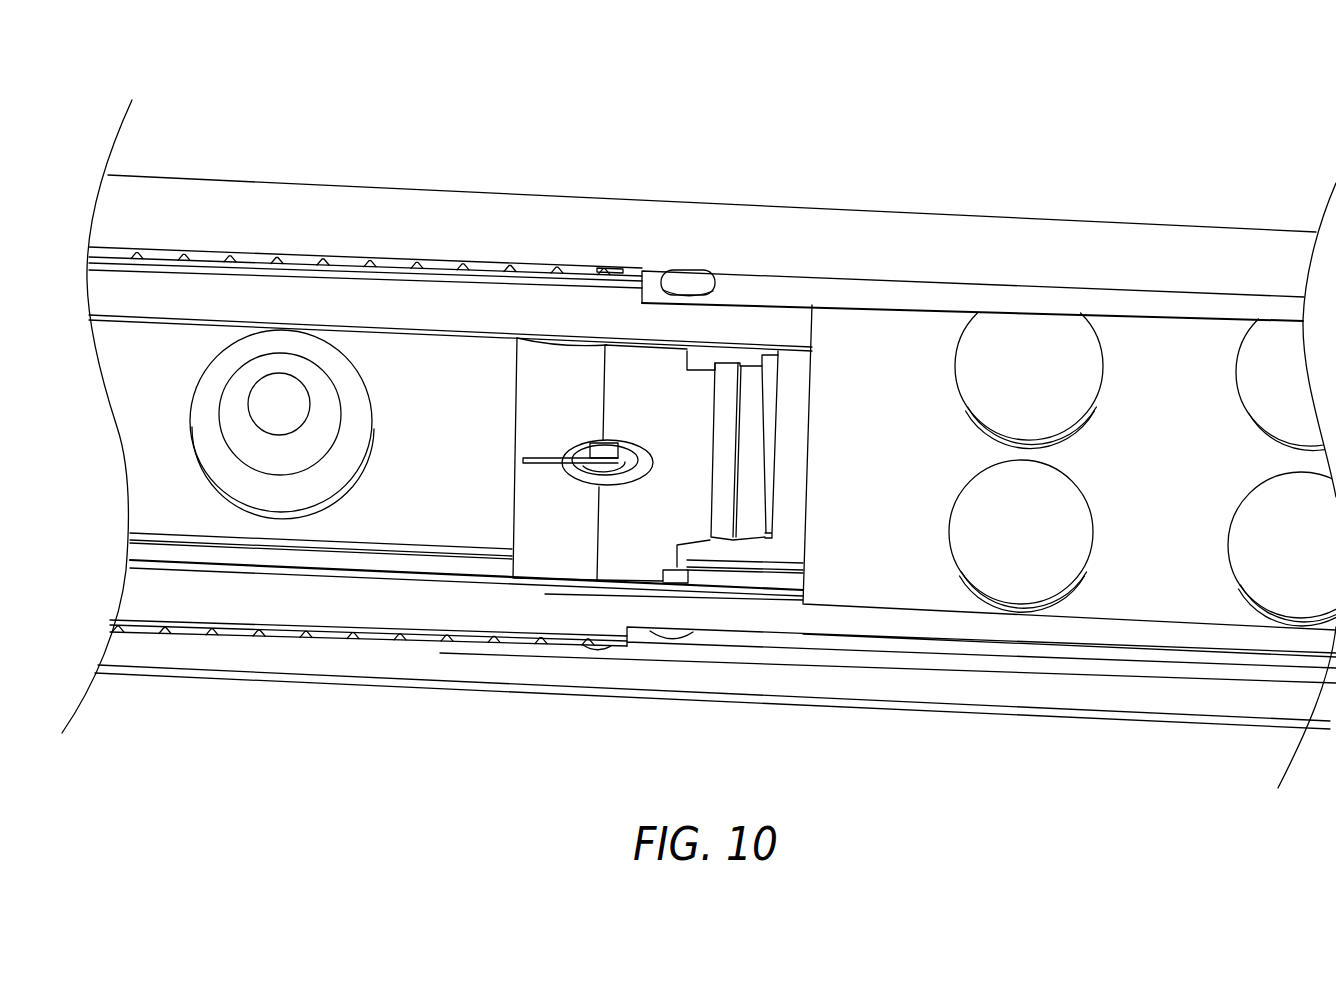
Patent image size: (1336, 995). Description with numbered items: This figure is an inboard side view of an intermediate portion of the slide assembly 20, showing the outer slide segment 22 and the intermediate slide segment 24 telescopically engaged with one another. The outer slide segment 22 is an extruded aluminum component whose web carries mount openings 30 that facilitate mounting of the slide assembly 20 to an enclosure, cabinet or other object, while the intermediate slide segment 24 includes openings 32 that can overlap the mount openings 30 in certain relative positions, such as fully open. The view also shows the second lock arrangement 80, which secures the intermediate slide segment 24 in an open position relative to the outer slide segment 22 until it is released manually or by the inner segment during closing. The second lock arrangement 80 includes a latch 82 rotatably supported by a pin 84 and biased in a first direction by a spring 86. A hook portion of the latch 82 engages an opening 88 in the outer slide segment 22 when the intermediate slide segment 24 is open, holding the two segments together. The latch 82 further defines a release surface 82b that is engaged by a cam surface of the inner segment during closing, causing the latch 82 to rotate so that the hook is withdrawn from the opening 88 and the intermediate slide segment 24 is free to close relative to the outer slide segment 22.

The slide assembly 20 is at (965, 121).
The outer slide segment 22 is at (1058, 212).
The intermediate slide segment 24 is at (808, 503).
The mount openings 30 is at (317, 387).
The openings 32 is at (352, 447).
The second lock arrangement 80 is at (723, 548).
The latch 82 is at (525, 526).
The release surface 82b is at (532, 403).
The pin 84 is at (597, 652).
The spring 86 is at (537, 463).
The opening 88 is at (810, 420).